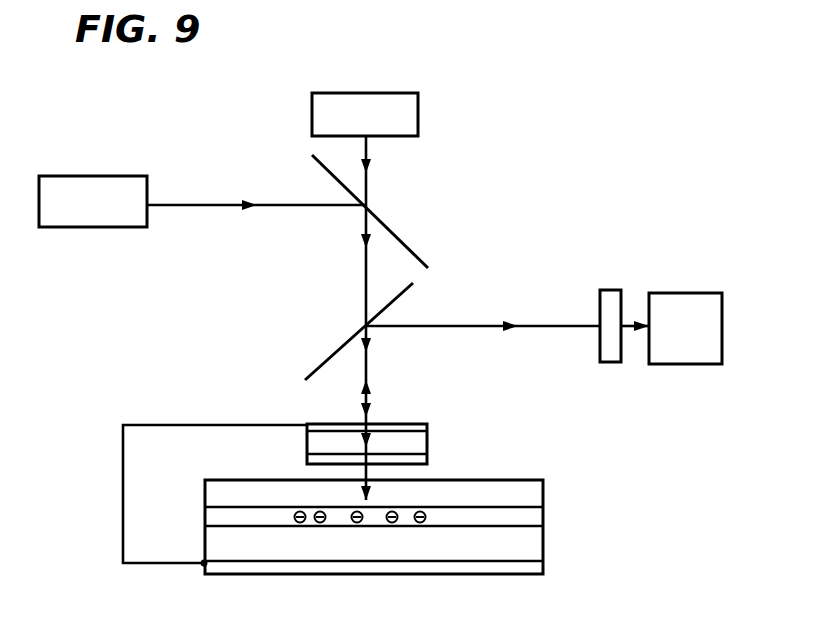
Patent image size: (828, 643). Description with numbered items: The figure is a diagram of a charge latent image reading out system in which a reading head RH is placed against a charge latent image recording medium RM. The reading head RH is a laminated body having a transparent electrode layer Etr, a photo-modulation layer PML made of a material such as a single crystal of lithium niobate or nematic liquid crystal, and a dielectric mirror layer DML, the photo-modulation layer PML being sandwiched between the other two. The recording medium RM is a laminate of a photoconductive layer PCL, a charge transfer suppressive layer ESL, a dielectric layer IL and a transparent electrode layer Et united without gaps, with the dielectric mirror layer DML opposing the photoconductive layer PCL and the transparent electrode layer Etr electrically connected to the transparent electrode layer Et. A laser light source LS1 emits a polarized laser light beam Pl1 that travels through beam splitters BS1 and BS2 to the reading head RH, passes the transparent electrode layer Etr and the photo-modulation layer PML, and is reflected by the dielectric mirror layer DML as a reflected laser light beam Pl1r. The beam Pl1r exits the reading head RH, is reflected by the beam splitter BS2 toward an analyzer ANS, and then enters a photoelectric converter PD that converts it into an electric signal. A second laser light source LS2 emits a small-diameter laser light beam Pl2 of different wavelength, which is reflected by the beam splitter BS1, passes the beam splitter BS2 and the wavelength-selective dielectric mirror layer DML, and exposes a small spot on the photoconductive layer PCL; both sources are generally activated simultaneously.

The laser light source LS1 is at (365, 114).
The laser light source LS2 is at (93, 201).
The beam splitter BS1 is at (388, 225).
The beam splitter BS2 is at (405, 296).
The laser light beam Pl1 is at (392, 176).
The laser light beam Pl2 is at (203, 190).
The reflected laser light beam Pl1r is at (537, 312).
The analyzer ANS is at (607, 290).
The photoelectric converter PD is at (685, 328).
The reading head RH is at (316, 411).
The photo-modulation layer PML is at (420, 445).
The transparent electrode layer Etr is at (435, 424).
The dielectric mirror layer DML is at (428, 461).
The photoconductive layer PCL is at (543, 492).
The charge transfer suppressive layer ESL is at (543, 512).
The dielectric layer IL is at (543, 540).
The charge latent image recording medium RM is at (572, 566).
The transparent electrode layer Et is at (291, 574).